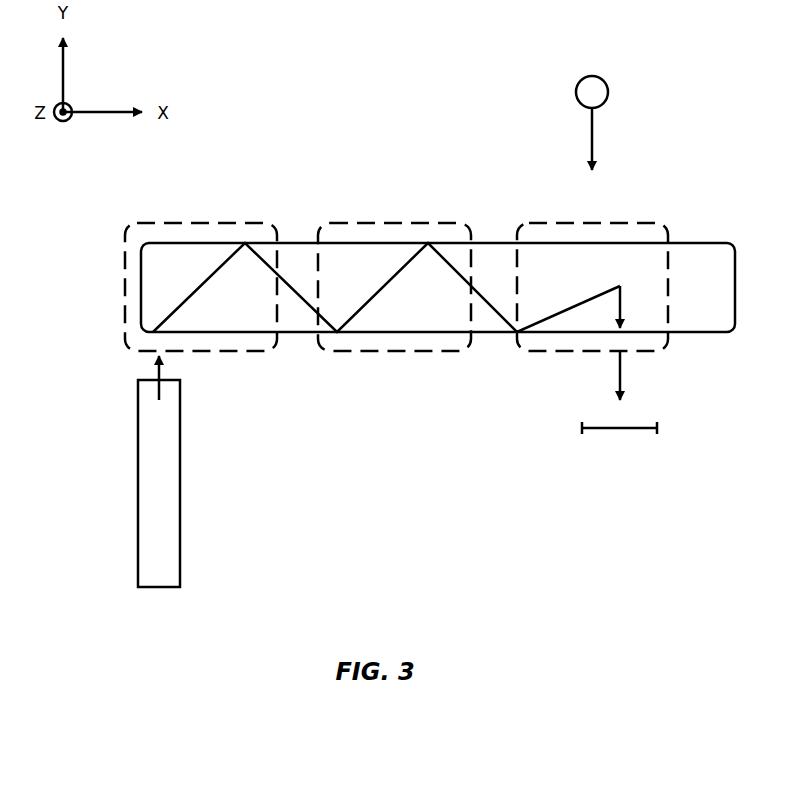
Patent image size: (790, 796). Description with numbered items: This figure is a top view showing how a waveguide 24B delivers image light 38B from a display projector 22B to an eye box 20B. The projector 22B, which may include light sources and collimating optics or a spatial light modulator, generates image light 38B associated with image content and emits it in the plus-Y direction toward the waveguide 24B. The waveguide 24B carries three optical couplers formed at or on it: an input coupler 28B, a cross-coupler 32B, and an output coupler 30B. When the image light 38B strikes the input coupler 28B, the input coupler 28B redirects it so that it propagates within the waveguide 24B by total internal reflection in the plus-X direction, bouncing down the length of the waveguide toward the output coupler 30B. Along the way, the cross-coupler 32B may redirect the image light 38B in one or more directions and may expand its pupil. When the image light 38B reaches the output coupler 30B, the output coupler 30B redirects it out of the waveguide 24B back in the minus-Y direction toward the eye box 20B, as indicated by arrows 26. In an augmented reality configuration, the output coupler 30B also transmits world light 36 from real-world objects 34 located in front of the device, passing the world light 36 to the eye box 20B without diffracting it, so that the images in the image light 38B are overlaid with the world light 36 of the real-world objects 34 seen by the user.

The eye box 20B is at (622, 430).
The projector 22B is at (160, 575).
The waveguide 24B is at (553, 253).
The arrows 26 is at (622, 370).
The input coupler 28B is at (198, 222).
The output coupler 30B is at (644, 222).
The cross-coupler 32B is at (392, 222).
The real-world objects 34 is at (609, 90).
The world light 36 is at (594, 127).
The image light 38B is at (400, 272).